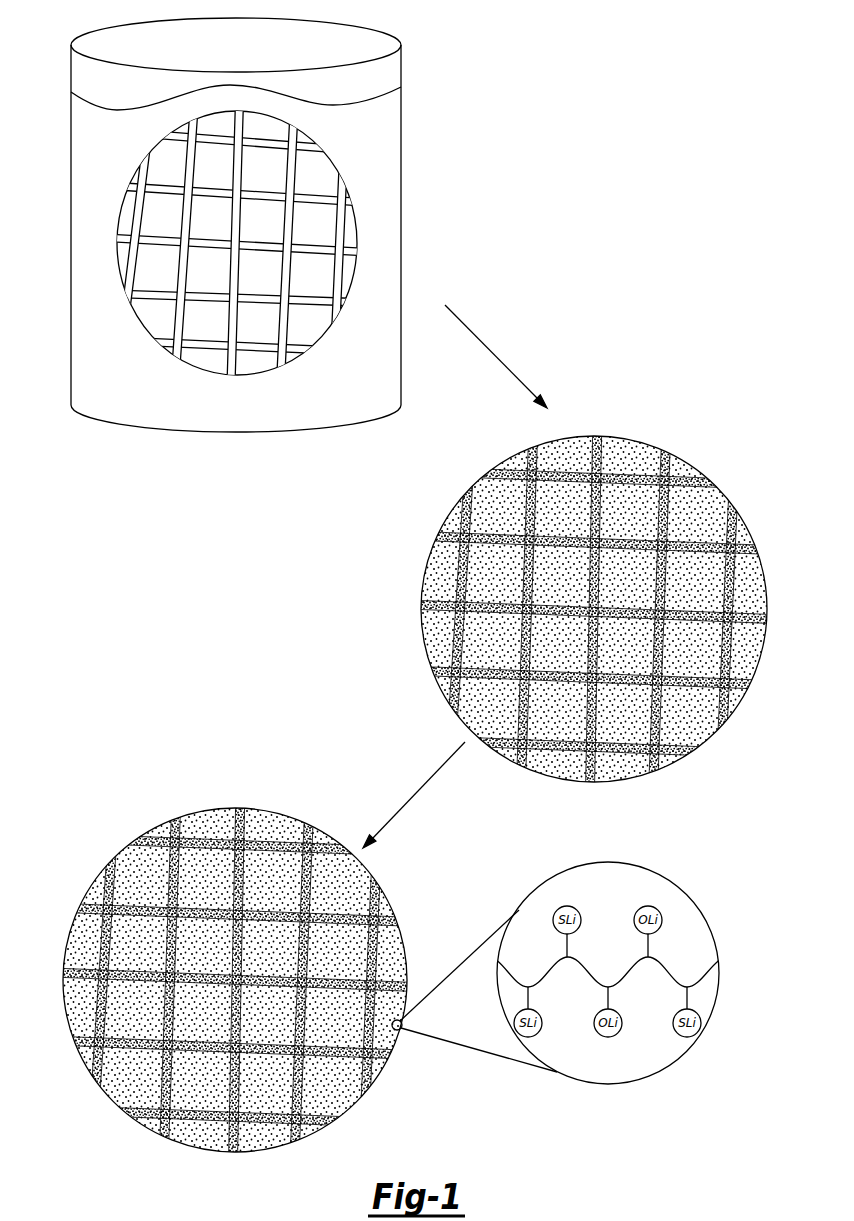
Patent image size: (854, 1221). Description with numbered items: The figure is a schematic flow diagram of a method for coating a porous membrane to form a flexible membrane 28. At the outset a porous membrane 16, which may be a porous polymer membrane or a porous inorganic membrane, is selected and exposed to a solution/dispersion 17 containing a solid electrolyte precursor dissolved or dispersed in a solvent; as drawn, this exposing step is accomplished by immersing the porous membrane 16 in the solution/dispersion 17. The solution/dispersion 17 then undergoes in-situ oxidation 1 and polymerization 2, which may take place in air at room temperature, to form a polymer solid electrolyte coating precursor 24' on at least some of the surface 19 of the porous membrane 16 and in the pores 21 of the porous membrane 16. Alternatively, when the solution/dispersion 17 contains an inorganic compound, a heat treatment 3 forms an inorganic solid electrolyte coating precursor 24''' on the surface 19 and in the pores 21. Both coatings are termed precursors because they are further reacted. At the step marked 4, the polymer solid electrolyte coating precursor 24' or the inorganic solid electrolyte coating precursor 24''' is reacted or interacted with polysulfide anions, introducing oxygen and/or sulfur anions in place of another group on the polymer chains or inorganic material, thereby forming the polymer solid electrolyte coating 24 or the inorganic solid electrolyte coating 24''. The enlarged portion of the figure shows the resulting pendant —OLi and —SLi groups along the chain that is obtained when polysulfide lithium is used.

The oxidation 1 is at (496, 356).
The polymerization 2 is at (496, 356).
The heat treatment 3 is at (496, 356).
The reaction or interaction with polysulfide anions 4 is at (414, 795).
The porous membrane 16 is at (328, 157).
The solution/dispersion 17 is at (390, 179).
The surface 19 is at (602, 604).
The pores 21 is at (602, 609).
The polymer solid electrolyte coating precursor 24' is at (602, 609).
The inorganic solid electrolyte coating precursor 24''' is at (602, 609).
The polymer solid electrolyte coating 24 is at (252, 981).
The inorganic solid electrolyte coating 24'' is at (252, 981).
The flexible membrane 28 is at (252, 967).